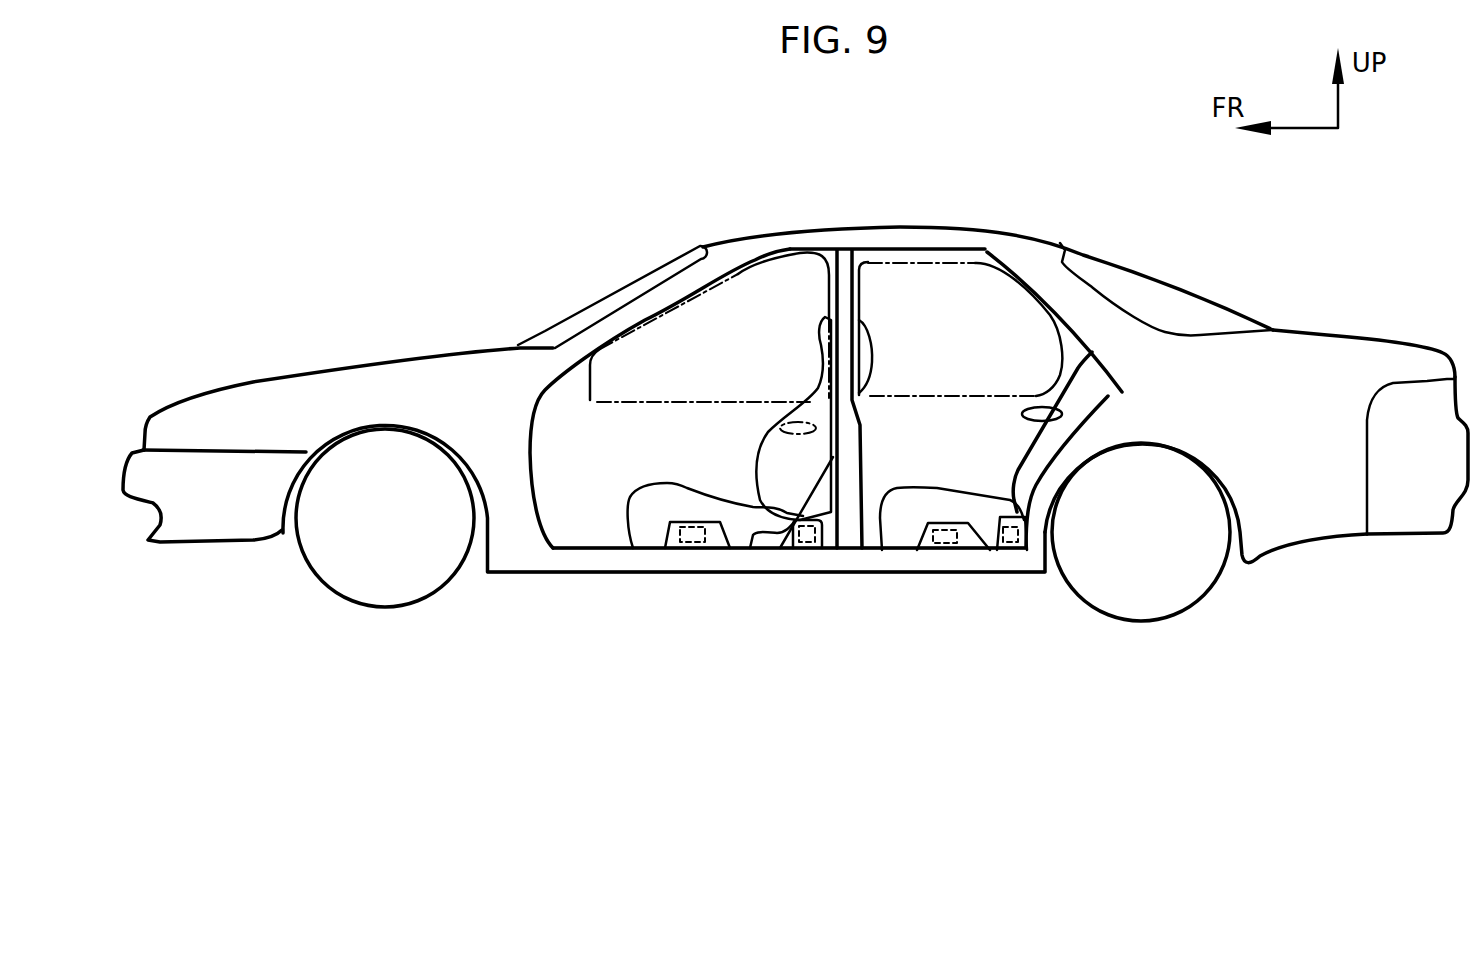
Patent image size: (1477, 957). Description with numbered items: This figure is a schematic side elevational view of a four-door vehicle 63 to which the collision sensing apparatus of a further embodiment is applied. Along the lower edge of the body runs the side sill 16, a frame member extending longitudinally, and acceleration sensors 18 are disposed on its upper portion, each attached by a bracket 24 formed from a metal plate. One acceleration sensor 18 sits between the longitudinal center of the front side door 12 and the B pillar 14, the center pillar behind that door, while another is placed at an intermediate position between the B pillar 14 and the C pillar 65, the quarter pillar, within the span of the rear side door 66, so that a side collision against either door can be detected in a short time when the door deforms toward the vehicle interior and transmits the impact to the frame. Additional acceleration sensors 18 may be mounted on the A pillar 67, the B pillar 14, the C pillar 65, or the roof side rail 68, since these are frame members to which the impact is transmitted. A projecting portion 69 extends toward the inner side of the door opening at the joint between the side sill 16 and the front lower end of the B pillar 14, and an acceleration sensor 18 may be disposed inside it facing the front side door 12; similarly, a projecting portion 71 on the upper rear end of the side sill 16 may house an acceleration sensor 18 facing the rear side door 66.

The front side door 12 is at (676, 282).
The B pillar 14 is at (853, 279).
The side sill 16 is at (952, 568).
The acceleration sensor 18 is at (680, 548).
The bracket 24 is at (690, 520).
The four-door vehicle 63 is at (908, 212).
The C pillar 65 is at (1077, 303).
The rear side door 66 is at (986, 247).
The A pillar 67 is at (618, 317).
The roof side rail 68 is at (790, 247).
The projecting portion 69 is at (750, 548).
The projecting portion 71 is at (1012, 515).